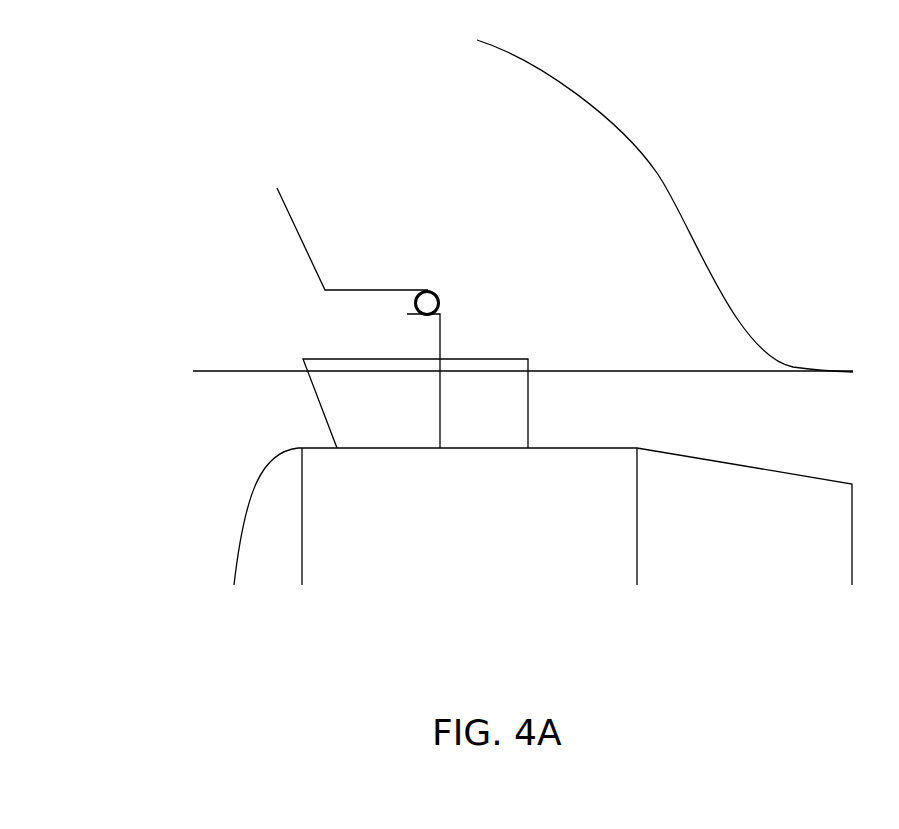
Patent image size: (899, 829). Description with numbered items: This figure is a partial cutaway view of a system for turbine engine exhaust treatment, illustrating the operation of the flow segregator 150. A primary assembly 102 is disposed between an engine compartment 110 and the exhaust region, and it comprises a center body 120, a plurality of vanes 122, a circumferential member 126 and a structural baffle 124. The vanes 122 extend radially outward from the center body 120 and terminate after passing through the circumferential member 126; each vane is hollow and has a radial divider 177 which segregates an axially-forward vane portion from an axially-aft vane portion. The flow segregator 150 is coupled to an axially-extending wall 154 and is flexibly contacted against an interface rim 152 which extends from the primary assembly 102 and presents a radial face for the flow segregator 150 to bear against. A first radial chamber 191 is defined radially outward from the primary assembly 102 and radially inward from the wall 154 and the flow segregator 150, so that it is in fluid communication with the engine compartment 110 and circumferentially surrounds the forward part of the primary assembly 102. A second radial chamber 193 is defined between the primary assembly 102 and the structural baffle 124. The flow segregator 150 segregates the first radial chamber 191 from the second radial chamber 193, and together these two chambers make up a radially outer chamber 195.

The primary assembly 102 is at (169, 439).
The engine compartment 110 is at (127, 286).
The center body 120 is at (467, 570).
The vanes 122 is at (322, 408).
The structural baffle 124 is at (657, 175).
The circumferential member 126 is at (230, 370).
The flow segregator 150 is at (440, 292).
The interface rim 152 is at (440, 337).
The axially-extending wall 154 is at (298, 238).
The radial divider 177 is at (440, 410).
The first radial chamber 191 is at (372, 343).
The second radial chamber 193 is at (498, 215).
The radially outer chamber 195 is at (371, 148).